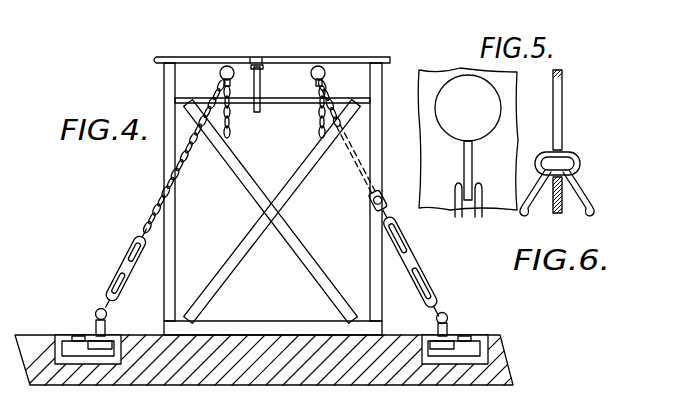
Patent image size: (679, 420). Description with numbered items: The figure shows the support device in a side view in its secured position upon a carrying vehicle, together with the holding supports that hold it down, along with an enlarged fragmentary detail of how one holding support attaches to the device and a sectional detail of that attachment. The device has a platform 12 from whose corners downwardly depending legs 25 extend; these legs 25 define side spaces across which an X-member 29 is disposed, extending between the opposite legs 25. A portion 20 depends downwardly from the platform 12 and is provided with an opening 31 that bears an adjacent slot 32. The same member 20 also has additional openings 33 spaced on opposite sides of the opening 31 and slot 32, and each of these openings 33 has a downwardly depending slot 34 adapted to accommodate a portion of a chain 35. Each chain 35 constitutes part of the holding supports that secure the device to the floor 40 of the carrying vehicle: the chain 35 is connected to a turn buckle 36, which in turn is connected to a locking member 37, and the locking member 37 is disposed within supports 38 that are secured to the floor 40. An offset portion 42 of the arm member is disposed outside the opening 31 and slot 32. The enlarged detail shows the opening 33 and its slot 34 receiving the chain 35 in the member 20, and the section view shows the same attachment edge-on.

In FIG. 4, the platform 12 is at (293, 60).
In FIG. 4, the portion 20 is at (380, 86).
In FIG. 5, the portion 20 is at (437, 72).
In FIG. 6, the portion 20 is at (562, 73).
In FIG. 4, the legs 25 is at (179, 254).
In FIG. 4, the X-member 29 is at (290, 230).
In FIG. 4, the opening 31 is at (259, 60).
In FIG. 4, the slot 32 is at (250, 60).
In FIG. 4, the additional openings 33 is at (226, 65).
In FIG. 5, the additional openings 33 is at (492, 102).
In FIG. 6, the additional openings 33 is at (553, 100).
In FIG. 4, the downwardly depending slot 34 is at (221, 81).
In FIG. 5, the downwardly depending slot 34 is at (472, 143).
In FIG. 4, the chain 35 is at (212, 126).
In FIG. 5, the chain 35 is at (458, 186).
In FIG. 6, the chain 35 is at (580, 160).
In FIG. 4, the turn buckle 36 is at (131, 246).
In FIG. 4, the locking member 37 is at (106, 334).
In FIG. 4, the supports 38 is at (72, 338).
In FIG. 4, the floor 40 is at (424, 387).
In FIG. 4, the offset portion 42 is at (263, 82).